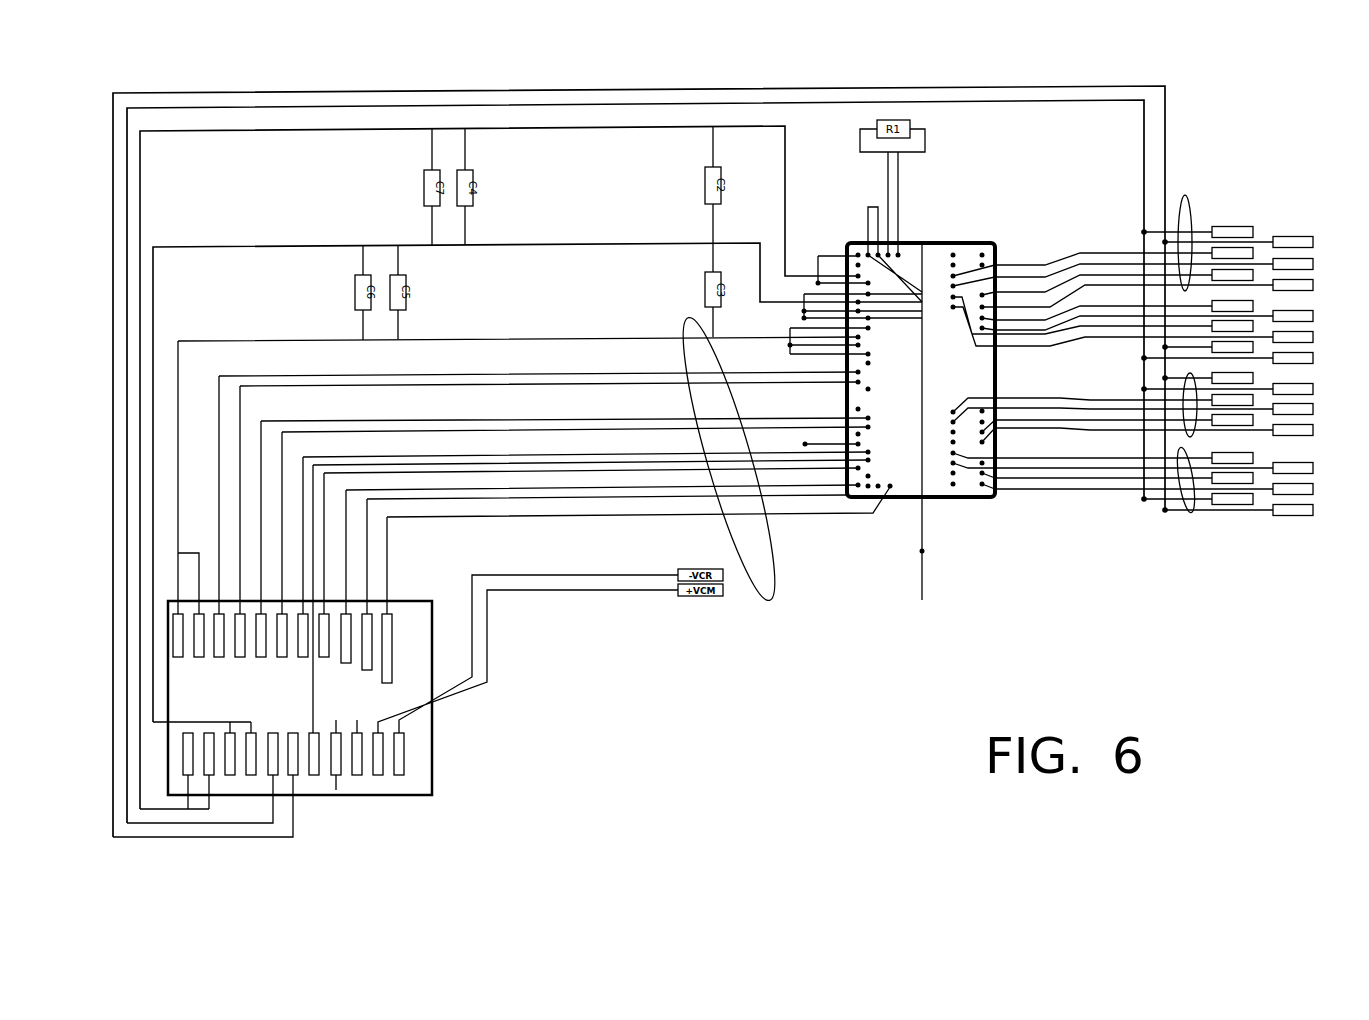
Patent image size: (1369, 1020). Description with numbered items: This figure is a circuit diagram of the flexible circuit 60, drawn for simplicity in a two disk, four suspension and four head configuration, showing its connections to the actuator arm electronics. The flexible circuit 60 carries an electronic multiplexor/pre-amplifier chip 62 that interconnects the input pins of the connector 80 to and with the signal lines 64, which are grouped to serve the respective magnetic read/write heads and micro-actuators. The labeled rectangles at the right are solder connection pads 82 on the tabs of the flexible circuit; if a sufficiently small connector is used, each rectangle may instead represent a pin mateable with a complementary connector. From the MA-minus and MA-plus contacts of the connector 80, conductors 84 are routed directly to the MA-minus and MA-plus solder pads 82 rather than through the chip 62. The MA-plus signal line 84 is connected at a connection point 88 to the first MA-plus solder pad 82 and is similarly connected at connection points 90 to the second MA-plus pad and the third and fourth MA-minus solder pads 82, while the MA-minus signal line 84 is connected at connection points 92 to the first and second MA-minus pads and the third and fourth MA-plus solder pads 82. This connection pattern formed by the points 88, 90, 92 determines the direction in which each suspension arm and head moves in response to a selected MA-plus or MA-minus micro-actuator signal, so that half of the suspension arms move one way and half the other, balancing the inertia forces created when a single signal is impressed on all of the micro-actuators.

The flexible circuit 60 is at (884, 71).
The electronic multiplexor/pre-amplifier chip 62 is at (930, 265).
The signal lines 64 is at (1203, 196).
The connector 80 is at (433, 747).
The solder connection pads 82 is at (1288, 238).
The conductors 84 is at (294, 818).
The connection point 88 is at (1144, 232).
The connection point 90 is at (1144, 389).
The connection point 92 is at (1166, 242).